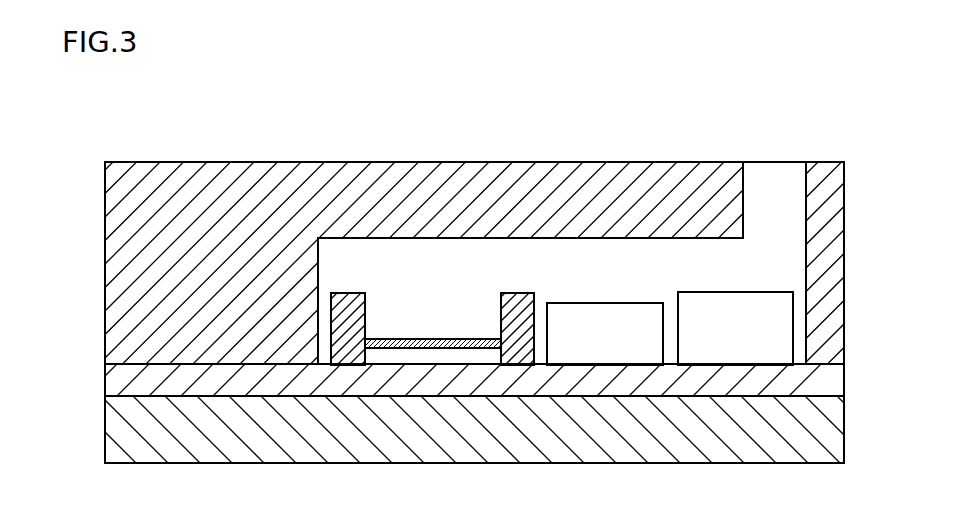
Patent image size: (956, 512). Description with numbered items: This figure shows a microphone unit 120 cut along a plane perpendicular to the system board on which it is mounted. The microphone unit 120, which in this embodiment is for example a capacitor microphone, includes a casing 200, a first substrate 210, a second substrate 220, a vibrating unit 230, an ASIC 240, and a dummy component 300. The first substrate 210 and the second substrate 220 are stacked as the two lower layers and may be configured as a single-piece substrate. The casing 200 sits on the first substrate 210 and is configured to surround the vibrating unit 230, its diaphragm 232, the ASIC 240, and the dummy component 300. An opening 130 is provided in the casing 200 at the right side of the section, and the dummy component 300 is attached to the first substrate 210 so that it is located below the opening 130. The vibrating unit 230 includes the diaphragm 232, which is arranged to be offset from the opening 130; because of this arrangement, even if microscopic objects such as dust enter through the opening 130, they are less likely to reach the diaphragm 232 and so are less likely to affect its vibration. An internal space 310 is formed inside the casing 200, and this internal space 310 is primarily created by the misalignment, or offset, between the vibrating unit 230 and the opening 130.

The microphone unit 120 is at (270, 108).
The opening 130 is at (770, 170).
The casing 200 is at (186, 173).
The first substrate 210 is at (115, 380).
The second substrate 220 is at (115, 427).
The vibrating unit 230 is at (348, 293).
The diaphragm 232 is at (426, 339).
The ASIC 240 is at (604, 310).
The dummy component 300 is at (734, 300).
The internal space 310 is at (449, 268).